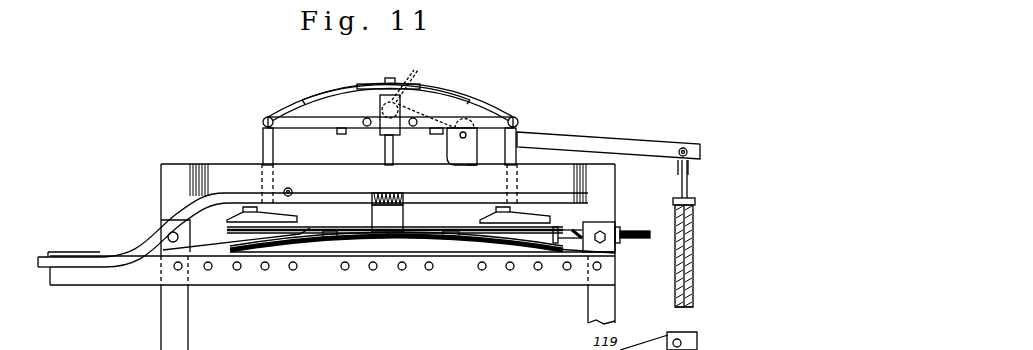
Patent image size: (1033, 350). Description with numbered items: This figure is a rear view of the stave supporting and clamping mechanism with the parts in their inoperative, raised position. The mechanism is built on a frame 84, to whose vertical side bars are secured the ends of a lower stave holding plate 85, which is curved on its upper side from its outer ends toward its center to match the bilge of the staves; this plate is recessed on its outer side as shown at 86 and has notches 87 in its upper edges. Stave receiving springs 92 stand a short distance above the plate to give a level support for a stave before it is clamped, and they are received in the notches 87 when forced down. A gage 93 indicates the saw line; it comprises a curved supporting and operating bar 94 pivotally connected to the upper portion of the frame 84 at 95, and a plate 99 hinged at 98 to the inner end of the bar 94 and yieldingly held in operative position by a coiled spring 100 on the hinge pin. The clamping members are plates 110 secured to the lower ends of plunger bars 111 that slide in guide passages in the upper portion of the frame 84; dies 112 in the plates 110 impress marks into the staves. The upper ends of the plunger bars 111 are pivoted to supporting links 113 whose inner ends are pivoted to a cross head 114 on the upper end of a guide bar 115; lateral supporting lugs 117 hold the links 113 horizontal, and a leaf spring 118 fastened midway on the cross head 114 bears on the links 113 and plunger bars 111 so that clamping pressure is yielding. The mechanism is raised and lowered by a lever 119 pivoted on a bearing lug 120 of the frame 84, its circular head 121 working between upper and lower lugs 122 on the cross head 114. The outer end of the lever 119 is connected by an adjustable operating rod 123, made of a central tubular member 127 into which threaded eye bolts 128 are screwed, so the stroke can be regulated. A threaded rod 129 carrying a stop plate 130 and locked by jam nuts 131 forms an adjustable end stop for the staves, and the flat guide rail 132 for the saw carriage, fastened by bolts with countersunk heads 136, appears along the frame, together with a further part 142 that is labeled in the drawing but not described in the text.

The frame 84 is at (168, 312).
The lower stave holding member or plate 85 is at (308, 257).
The recess 86 is at (365, 256).
The notches 87 is at (328, 258).
The stave receiving springs 92 is at (329, 232).
The gage 93 is at (142, 248).
The curved supporting and operating bar 94 is at (228, 201).
The pivotal connection 95 is at (293, 192).
The hinge 98 is at (398, 197).
The plate 99 is at (392, 238).
The coiled spring 100 is at (383, 194).
The clamping plates 110 is at (258, 210).
The plunger bars 111 is at (263, 140).
The dies 112 is at (248, 256).
The supporting links 113 is at (292, 125).
The cross head 114 is at (382, 140).
The guide bar 115 is at (394, 150).
The supporting lugs 117 is at (340, 133).
The leaf spring 118 is at (452, 93).
The lever 119 is at (596, 143).
The bearing lug 120 is at (480, 178).
The circular head 121 is at (383, 85).
The laterally projecting lugs 122 is at (428, 92).
The adjustable operating rod or link 123 is at (692, 258).
The central tubular member 127 is at (692, 290).
The eye bolts 128 is at (688, 183).
The threaded rod or bolt 129 is at (635, 248).
The head or stop plate 130 is at (554, 245).
The jam nuts 131 is at (617, 226).
The guide rail 132 is at (122, 280).
The tapered counter sunk heads 136 is at (208, 271).
The guide pin 142 is at (246, 317).